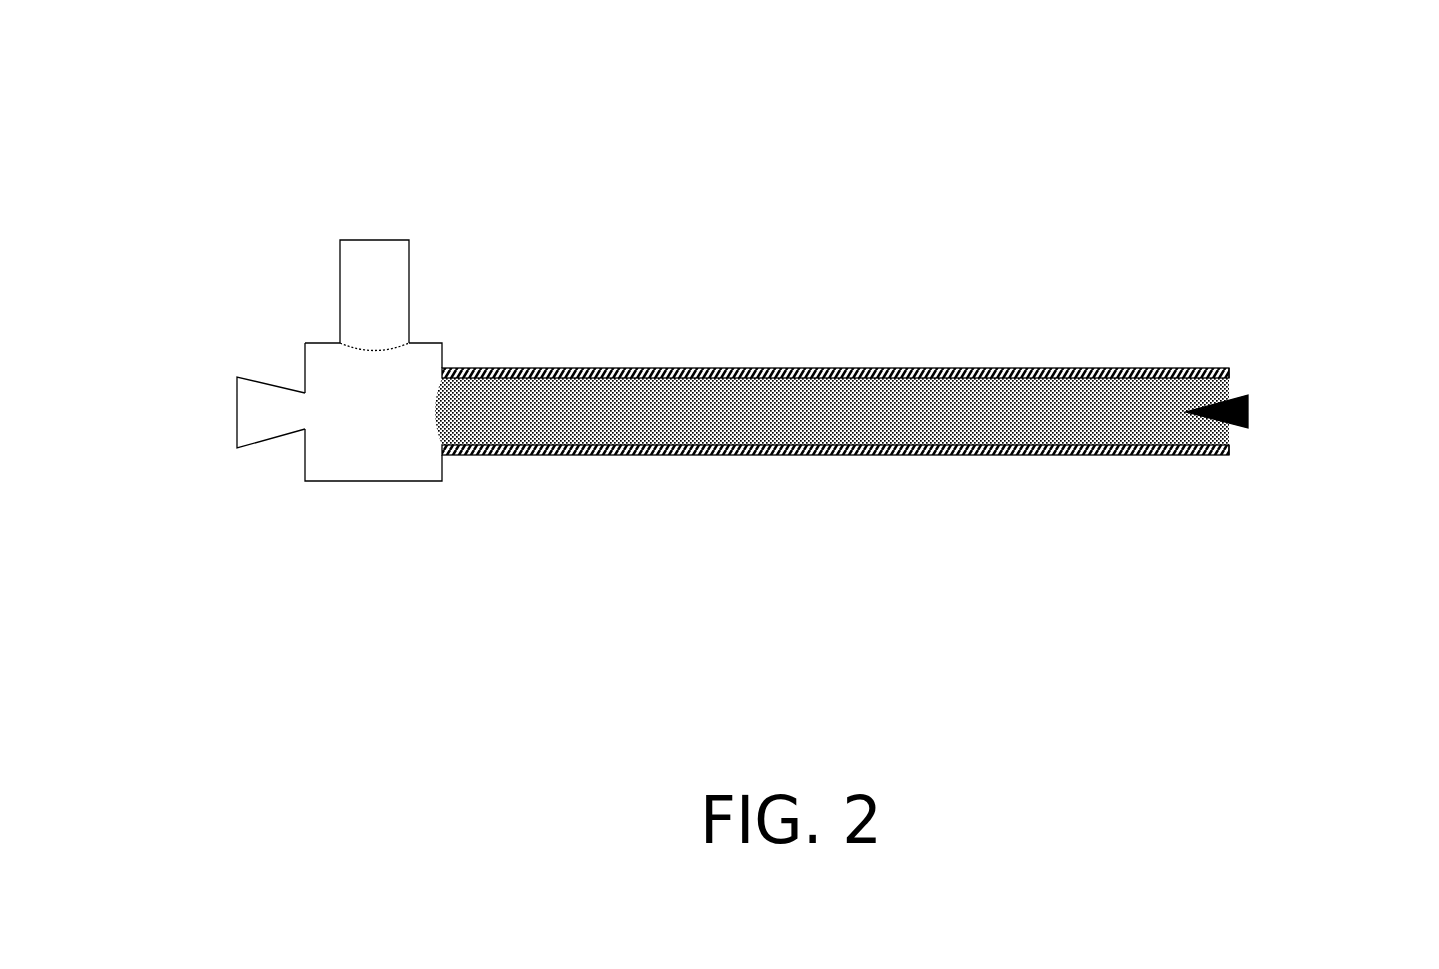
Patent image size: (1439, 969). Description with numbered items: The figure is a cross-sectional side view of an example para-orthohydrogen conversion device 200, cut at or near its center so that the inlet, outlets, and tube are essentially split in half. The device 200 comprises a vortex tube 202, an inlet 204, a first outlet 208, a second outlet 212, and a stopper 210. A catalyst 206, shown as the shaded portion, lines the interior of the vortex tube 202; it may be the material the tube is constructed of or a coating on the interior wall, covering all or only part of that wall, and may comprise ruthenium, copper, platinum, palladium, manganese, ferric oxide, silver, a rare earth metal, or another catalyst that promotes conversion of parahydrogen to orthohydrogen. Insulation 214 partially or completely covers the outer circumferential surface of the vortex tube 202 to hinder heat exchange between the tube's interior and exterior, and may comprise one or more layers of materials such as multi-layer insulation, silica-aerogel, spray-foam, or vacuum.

The para-orthohydrogen conversion device 200 is at (288, 86).
The vortex tube 202 is at (835, 369).
The inlet 204 is at (375, 240).
The catalyst 206 is at (797, 410).
The first outlet 208 is at (1229, 456).
The stopper 210 is at (1248, 395).
The second outlet 212 is at (306, 411).
The insulation 214 is at (702, 455).